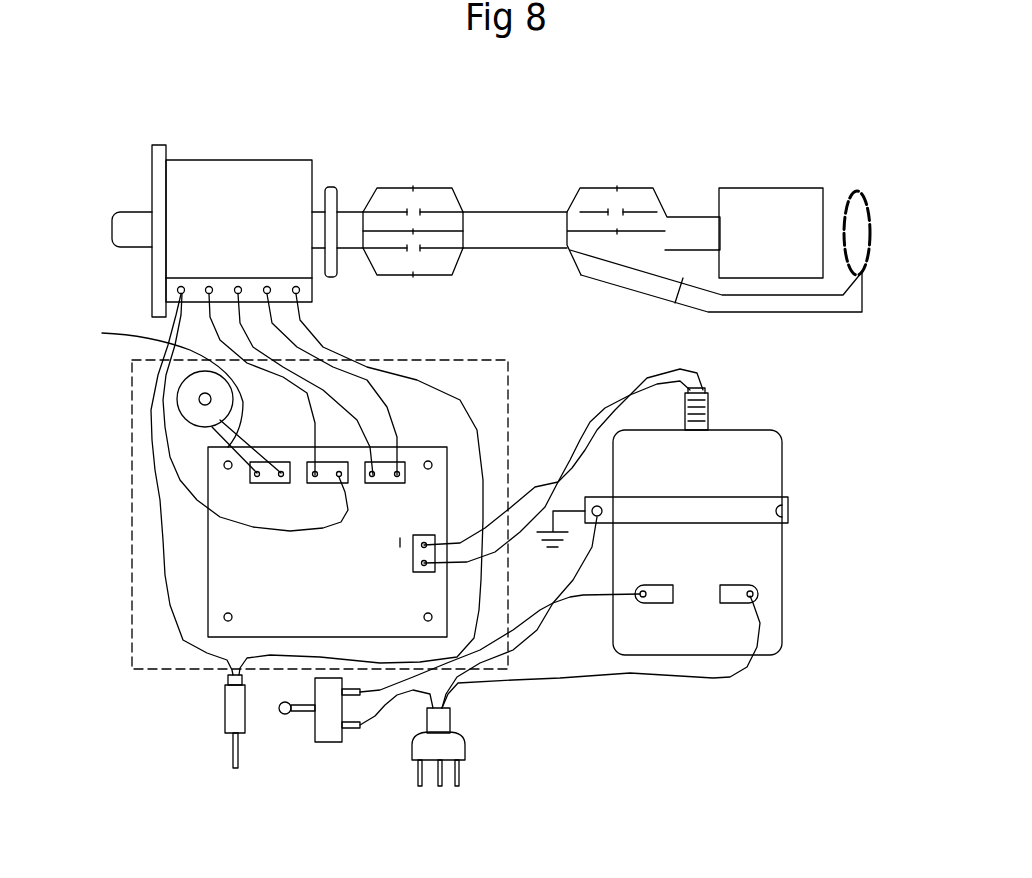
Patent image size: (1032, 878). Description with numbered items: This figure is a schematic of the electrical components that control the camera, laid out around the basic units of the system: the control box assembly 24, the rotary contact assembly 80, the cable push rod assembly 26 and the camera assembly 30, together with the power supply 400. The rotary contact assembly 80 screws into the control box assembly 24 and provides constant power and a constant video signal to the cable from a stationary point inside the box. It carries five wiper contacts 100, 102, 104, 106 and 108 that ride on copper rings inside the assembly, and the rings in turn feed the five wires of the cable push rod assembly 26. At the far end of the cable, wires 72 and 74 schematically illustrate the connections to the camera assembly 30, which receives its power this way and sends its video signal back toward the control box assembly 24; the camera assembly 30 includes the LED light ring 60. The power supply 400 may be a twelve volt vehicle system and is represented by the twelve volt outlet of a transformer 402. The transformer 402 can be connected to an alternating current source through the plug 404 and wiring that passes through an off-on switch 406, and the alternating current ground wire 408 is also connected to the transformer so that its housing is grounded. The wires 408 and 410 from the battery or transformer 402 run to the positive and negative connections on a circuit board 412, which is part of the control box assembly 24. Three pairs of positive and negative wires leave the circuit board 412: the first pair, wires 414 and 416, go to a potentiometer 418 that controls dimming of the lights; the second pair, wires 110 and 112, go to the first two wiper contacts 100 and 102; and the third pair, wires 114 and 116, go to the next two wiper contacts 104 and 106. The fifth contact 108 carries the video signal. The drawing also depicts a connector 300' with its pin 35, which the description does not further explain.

The rotary contact assembly 80 is at (322, 147).
The cable push rod assembly 26 is at (523, 205).
The camera assembly 30 is at (762, 175).
The LED light ring 60 is at (857, 192).
The wire 72 is at (827, 297).
The wire 74 is at (793, 313).
The wiper contact 100 is at (178, 290).
The wiper contact 102 is at (173, 247).
The wiper contact 104 is at (237, 281).
The wiper contact 106 is at (283, 300).
The wiper contact 108 is at (300, 291).
The control box assembly 24 is at (472, 360).
The circuit board 412 is at (260, 622).
The potentiometer 418 is at (178, 392).
The wire 414 is at (240, 437).
The wire 416 is at (148, 385).
The wire 110 is at (173, 475).
The wire 112 is at (282, 392).
The wire 114 is at (333, 398).
The wire 116 is at (367, 397).
The connector 300' is at (295, 514).
The connector pin 35 is at (230, 755).
The off-on switch 406 is at (330, 743).
The plug 404 is at (463, 740).
The power supply 400 is at (787, 563).
The transformer 402 is at (782, 588).
The alternating current ground wire 408 is at (630, 380).
The wire 410 is at (596, 402).